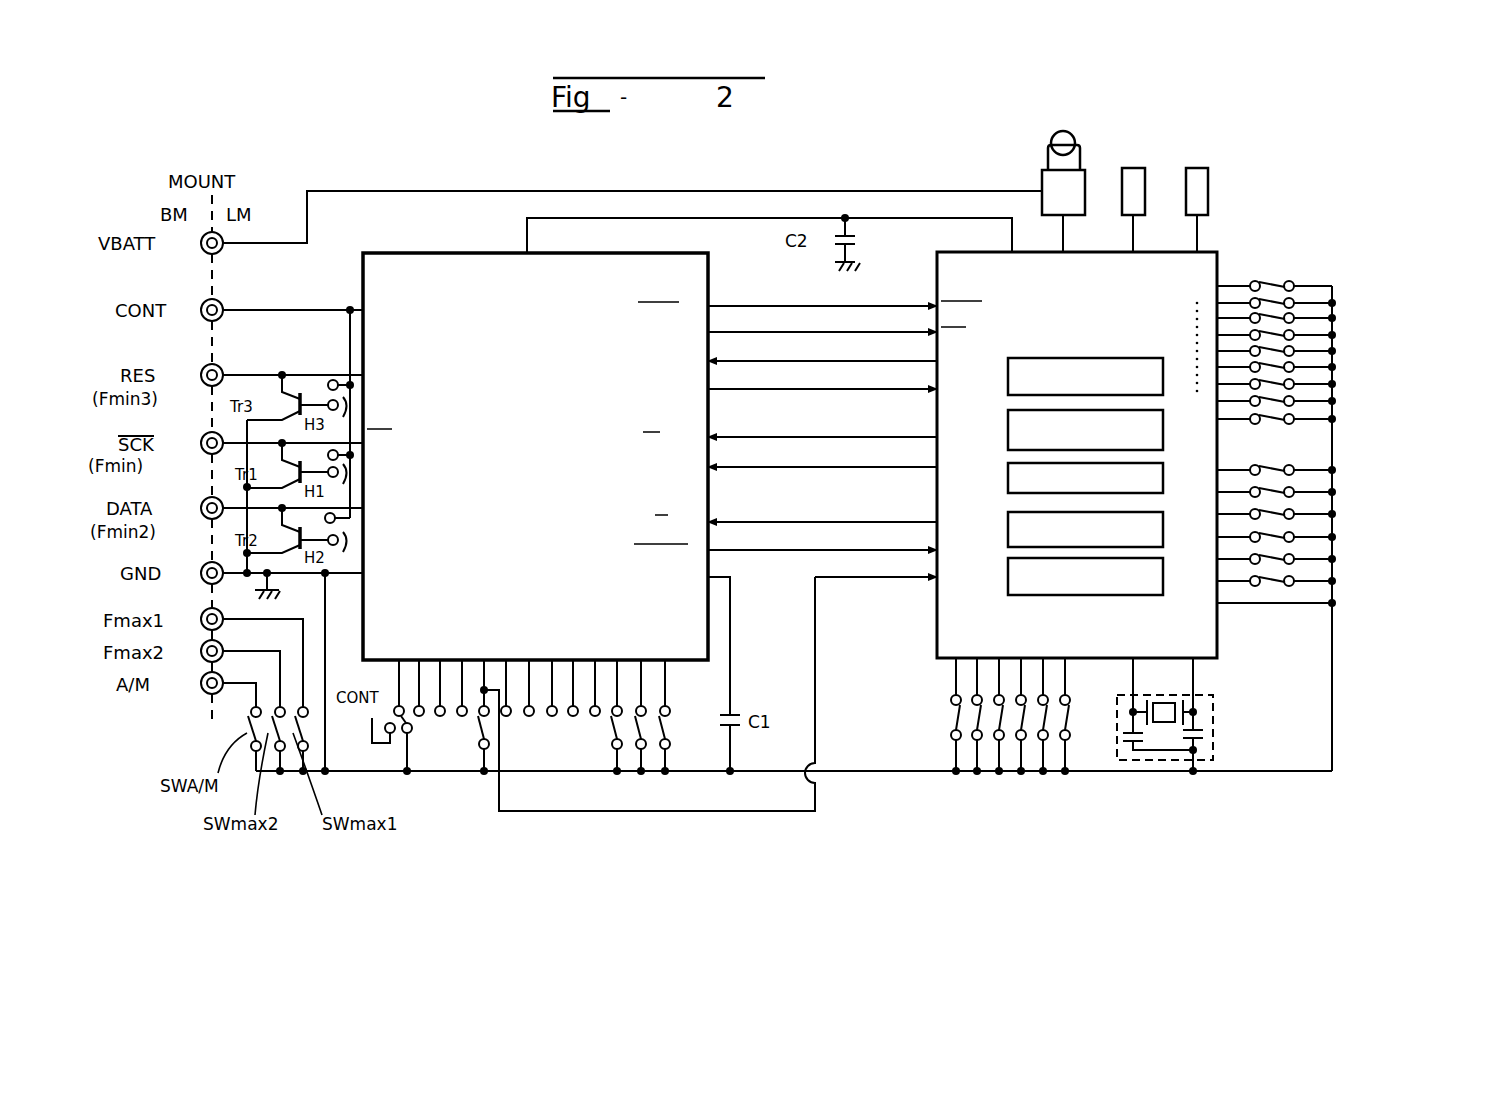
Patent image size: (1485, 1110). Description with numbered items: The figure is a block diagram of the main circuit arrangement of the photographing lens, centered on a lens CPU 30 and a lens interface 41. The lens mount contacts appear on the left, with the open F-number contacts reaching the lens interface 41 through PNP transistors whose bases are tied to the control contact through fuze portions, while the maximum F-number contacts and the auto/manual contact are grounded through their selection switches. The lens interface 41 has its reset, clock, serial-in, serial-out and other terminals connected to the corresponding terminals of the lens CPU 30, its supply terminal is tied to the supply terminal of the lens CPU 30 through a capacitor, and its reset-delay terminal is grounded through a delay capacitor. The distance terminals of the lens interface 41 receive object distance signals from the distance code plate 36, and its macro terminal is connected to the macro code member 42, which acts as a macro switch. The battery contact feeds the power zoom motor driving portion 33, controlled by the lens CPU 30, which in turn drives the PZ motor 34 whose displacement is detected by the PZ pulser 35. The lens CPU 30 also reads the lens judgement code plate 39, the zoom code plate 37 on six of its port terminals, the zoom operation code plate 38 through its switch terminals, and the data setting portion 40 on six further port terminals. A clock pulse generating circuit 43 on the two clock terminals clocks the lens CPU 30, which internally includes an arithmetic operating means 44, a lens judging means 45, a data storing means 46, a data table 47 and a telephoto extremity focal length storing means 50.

The lens CPU 30 is at (1047, 455).
The power zoom motor driving portion 33 is at (1078, 183).
The PZ motor 34 is at (1058, 135).
The PZ pulser 35 is at (1133, 170).
The distance code plate 36 is at (607, 781).
The zoom code plate 37 is at (1420, 620).
The zoom operation code plate 38 is at (1420, 270).
The lens judgement code plate 39 is at (1197, 168).
The data setting portion 40 is at (1073, 826).
The lens interface 41 is at (470, 266).
The macro code member 42 is at (484, 775).
The clock pulse generating circuit 43 is at (1213, 736).
The arithmetic operating means 44 is at (1032, 468).
The lens judging means 45 is at (1012, 368).
The data storing means 46 is at (1040, 528).
The data table 47 is at (1097, 586).
The telephoto extremity focal length storing means 50 is at (1030, 428).